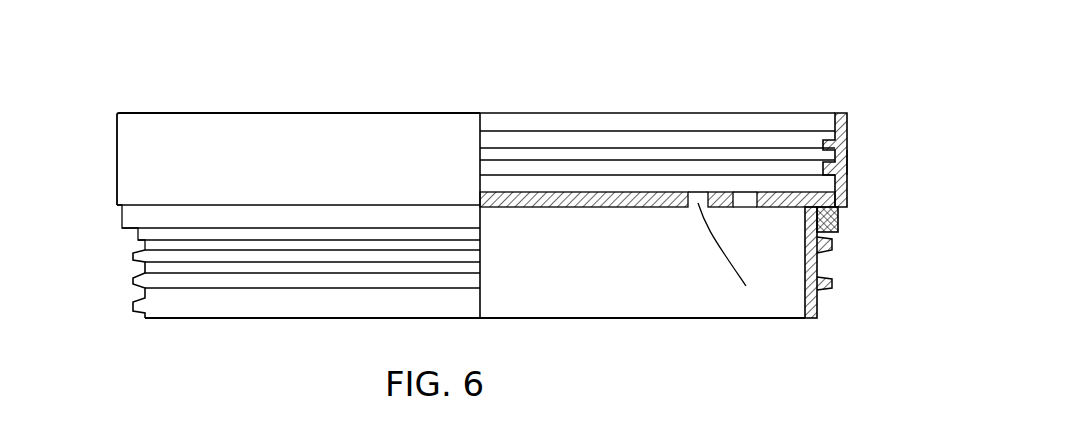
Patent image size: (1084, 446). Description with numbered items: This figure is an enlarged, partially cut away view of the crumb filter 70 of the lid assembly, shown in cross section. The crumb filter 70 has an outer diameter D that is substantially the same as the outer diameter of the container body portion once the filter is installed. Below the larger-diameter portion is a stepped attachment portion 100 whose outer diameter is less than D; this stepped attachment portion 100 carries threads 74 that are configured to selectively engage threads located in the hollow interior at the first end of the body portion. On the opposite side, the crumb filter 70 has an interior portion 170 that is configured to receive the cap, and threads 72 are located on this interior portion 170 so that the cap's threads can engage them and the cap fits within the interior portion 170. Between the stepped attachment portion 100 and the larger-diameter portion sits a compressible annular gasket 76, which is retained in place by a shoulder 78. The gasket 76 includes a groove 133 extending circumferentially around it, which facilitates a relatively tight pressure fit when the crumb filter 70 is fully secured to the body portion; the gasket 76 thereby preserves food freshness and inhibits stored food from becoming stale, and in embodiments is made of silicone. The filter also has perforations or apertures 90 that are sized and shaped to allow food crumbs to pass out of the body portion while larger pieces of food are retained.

The crumb filter 70 is at (213, 165).
The threads 72 is at (793, 144).
The threads 74 is at (136, 283).
The compressible annular gasket 76 is at (132, 215).
The shoulder 78 is at (833, 245).
The apertures 90 is at (747, 202).
The stepped attachment portion 100 is at (262, 306).
The groove 133 is at (838, 233).
The interior portion 170 is at (524, 140).
The outer diameter D is at (849, 162).